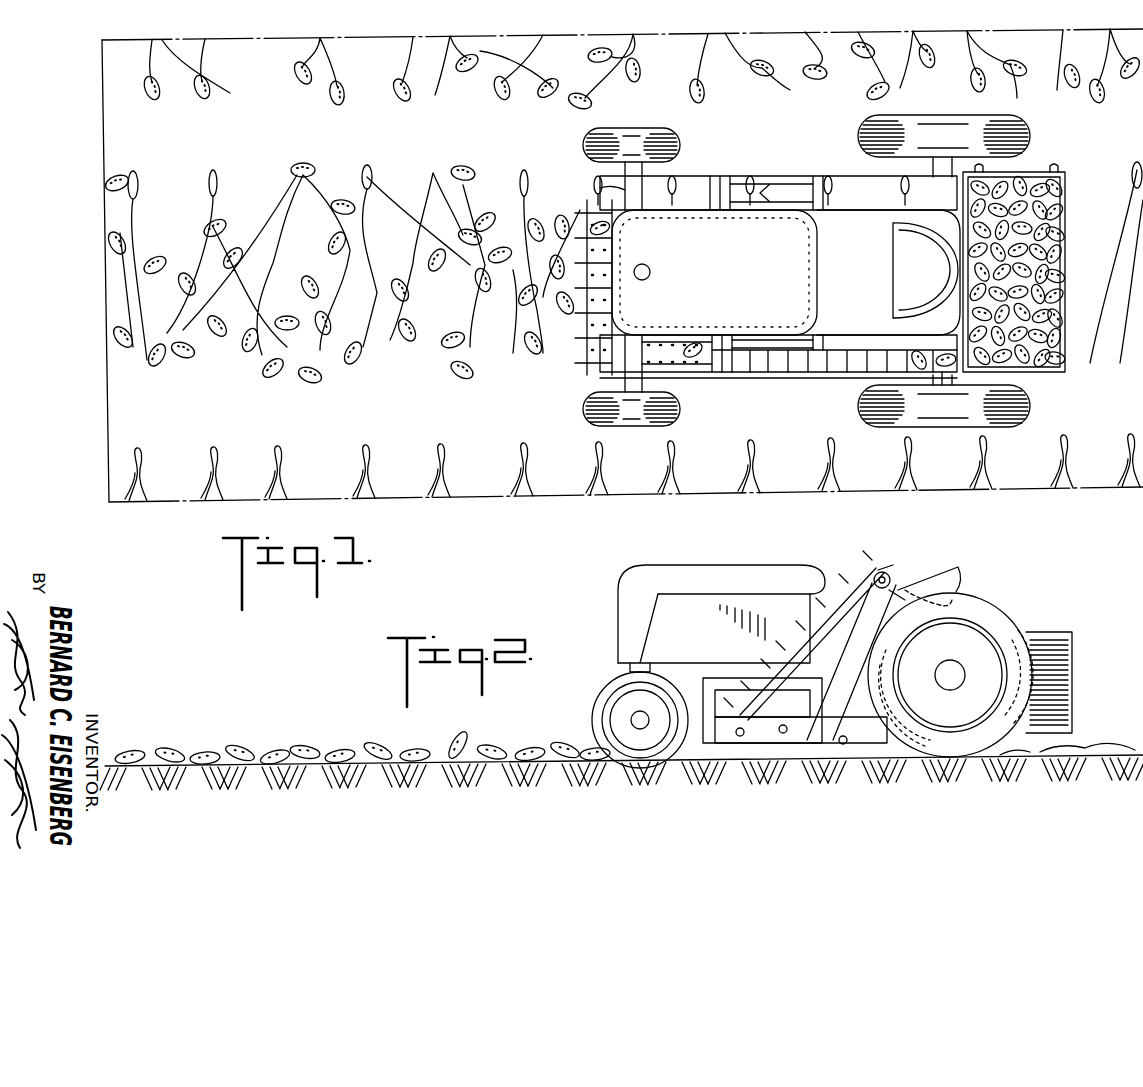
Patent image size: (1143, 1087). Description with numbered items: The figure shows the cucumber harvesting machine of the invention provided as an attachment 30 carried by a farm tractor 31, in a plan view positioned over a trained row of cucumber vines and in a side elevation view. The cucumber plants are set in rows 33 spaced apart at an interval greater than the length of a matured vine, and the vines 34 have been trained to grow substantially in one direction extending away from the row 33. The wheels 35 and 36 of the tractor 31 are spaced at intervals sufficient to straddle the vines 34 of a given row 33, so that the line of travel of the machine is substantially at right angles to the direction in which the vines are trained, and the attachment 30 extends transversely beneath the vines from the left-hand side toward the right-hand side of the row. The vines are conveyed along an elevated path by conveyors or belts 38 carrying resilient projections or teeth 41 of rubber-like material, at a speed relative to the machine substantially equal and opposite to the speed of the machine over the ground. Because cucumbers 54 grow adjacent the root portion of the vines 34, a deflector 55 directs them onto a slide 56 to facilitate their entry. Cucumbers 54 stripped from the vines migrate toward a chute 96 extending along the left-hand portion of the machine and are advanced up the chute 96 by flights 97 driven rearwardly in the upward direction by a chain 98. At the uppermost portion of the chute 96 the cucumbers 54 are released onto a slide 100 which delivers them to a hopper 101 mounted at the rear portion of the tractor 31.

In FIG. 1, the attachment 30 is at (812, 375).
In FIG. 2, the attachment 30 is at (705, 770).
In FIG. 1, the farm tractor 31 is at (886, 178).
In FIG. 2, the farm tractor 31 is at (604, 617).
In FIG. 1, the rows 33 is at (97, 193).
In FIG. 1, the vines 34 is at (418, 240).
In FIG. 1, the wheels 35 is at (583, 143).
In FIG. 1, the wheels 36 is at (858, 137).
In FIG. 1, the conveyors or belts 38 is at (598, 352).
In FIG. 1, the resilient projections or teeth 41 is at (580, 352).
In FIG. 1, the cucumbers 54 is at (341, 250).
In FIG. 2, the cucumbers 54 is at (458, 735).
In FIG. 1, the deflector 55 is at (600, 182).
In FIG. 1, the slide 56 is at (623, 187).
In FIG. 2, the chute 96 is at (848, 664).
In FIG. 2, the flights 97 is at (890, 574).
In FIG. 2, the chain 98 is at (805, 650).
In FIG. 1, the slide 100 is at (893, 347).
In FIG. 1, the hopper 101 is at (1070, 360).
In FIG. 2, the hopper 101 is at (1060, 645).